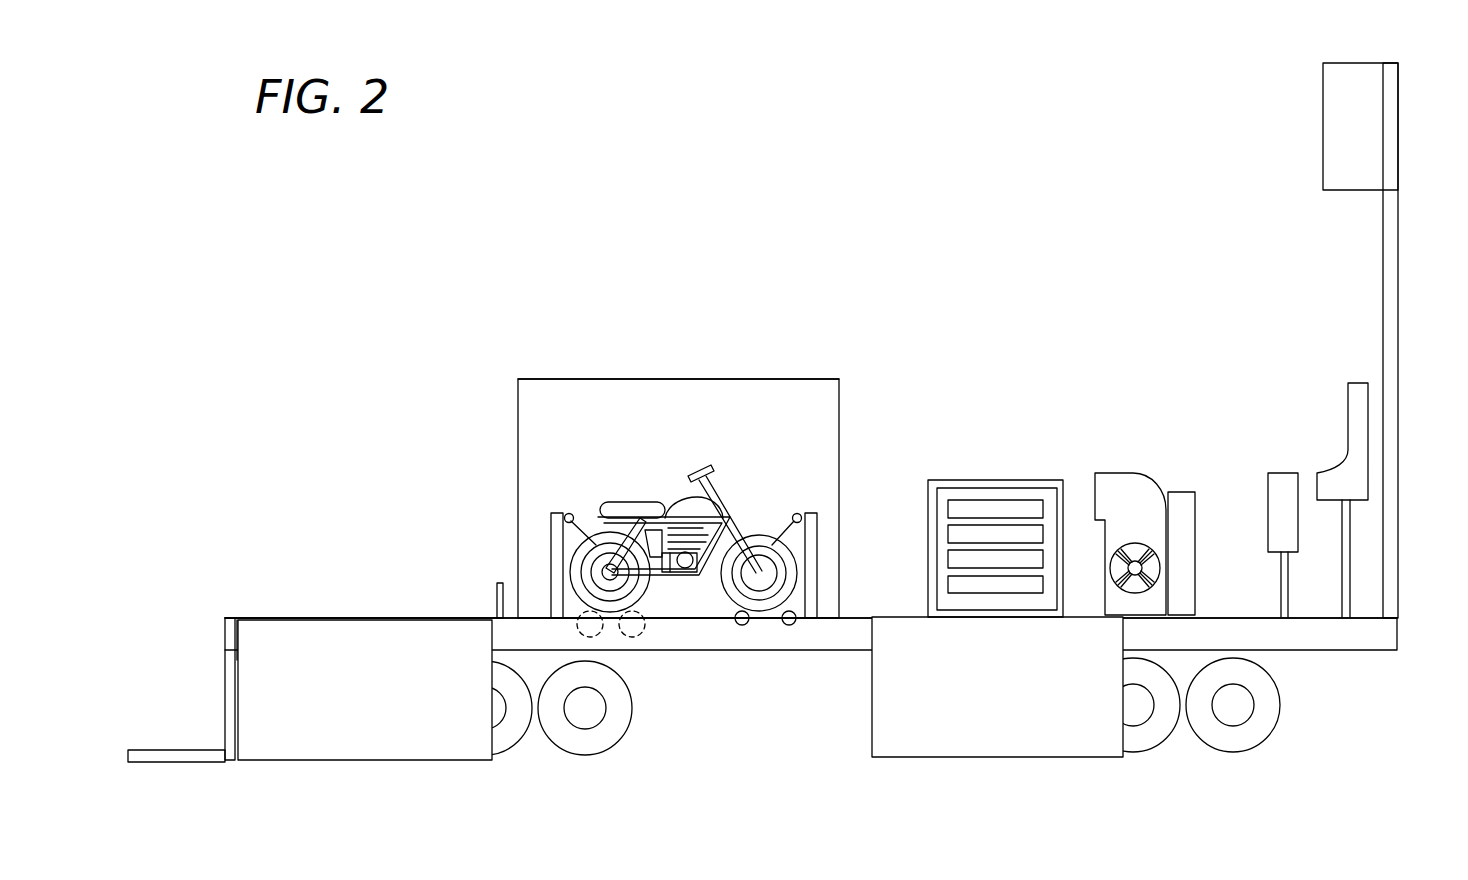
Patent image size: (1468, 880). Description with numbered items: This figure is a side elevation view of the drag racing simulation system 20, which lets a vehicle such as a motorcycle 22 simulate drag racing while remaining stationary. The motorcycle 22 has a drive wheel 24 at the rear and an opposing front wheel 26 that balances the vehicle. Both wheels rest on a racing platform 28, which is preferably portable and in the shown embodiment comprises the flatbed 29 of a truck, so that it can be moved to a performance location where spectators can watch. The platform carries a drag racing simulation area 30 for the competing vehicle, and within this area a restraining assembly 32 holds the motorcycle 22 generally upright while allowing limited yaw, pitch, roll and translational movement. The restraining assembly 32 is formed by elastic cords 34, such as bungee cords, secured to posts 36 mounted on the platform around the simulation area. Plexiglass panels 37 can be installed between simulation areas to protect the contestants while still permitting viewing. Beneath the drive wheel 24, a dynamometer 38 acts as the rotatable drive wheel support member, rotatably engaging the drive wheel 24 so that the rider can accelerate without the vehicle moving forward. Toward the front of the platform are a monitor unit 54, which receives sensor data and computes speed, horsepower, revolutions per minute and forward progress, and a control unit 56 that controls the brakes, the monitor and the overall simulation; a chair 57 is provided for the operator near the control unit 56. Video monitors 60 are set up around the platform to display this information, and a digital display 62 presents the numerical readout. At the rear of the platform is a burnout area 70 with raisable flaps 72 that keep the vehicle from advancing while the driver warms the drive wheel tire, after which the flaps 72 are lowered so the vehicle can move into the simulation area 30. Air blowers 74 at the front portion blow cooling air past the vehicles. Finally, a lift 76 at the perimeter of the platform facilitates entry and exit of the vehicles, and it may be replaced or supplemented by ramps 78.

The drag racing simulation system 20 is at (447, 298).
The motorcycle 22 is at (627, 493).
The drive wheel 24 is at (647, 592).
The front wheel 26 is at (797, 600).
The racing platform 28 is at (1407, 632).
The flatbed 29 is at (1328, 650).
The drag racing simulation area 30 is at (852, 422).
The restraining assembly 32 is at (540, 530).
The elastic cords 34 is at (572, 512).
The posts 36 is at (545, 558).
The plexiglass panels 37 is at (788, 379).
The dynamometer 38 is at (608, 638).
The monitor unit 54 is at (1173, 490).
The control unit 56 is at (1282, 473).
The chair 57 is at (1348, 395).
The video monitors 60 is at (1323, 170).
The digital display 62 is at (987, 507).
The burnout area 70 is at (290, 600).
The flaps 72 is at (497, 598).
The air blowers 74 is at (1117, 473).
The lifts 76 is at (180, 728).
The ramps 78 is at (402, 762).